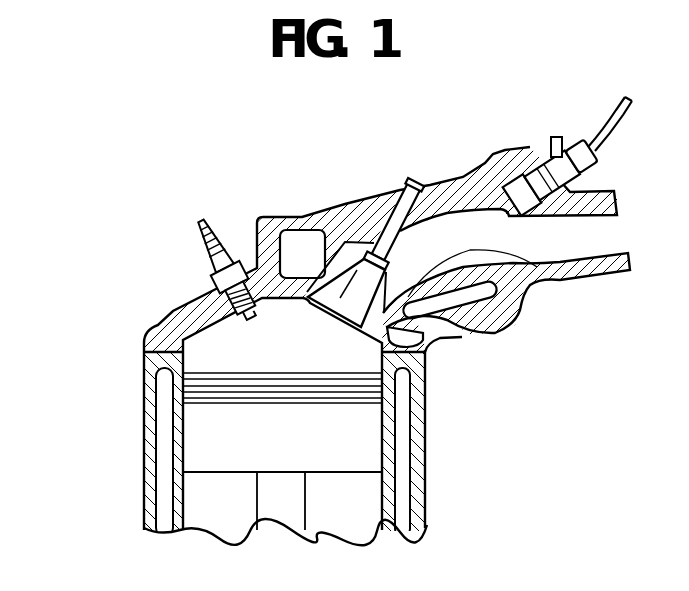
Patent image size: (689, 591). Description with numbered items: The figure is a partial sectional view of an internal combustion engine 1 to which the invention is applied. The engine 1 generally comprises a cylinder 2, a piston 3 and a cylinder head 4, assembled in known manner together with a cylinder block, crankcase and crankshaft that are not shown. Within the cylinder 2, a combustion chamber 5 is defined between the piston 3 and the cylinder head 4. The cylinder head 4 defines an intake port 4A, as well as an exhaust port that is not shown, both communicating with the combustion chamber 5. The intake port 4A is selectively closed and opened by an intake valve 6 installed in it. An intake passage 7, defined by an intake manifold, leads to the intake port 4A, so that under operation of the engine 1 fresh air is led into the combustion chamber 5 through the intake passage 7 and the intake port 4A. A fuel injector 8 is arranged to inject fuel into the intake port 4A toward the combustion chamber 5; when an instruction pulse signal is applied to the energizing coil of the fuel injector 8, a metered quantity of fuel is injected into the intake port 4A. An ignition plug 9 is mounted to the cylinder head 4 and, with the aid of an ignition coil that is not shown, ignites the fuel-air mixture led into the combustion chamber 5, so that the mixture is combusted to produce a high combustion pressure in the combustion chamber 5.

The internal combustion engine 1 is at (116, 336).
The cylinder 2 is at (143, 445).
The piston 3 is at (362, 449).
The cylinder head 4 is at (320, 272).
The intake port 4A is at (541, 283).
The combustion chamber 5 is at (217, 353).
The intake valve 6 is at (462, 337).
The intake passage 7 is at (603, 194).
The fuel injector 8 is at (543, 162).
The ignition plug 9 is at (233, 262).